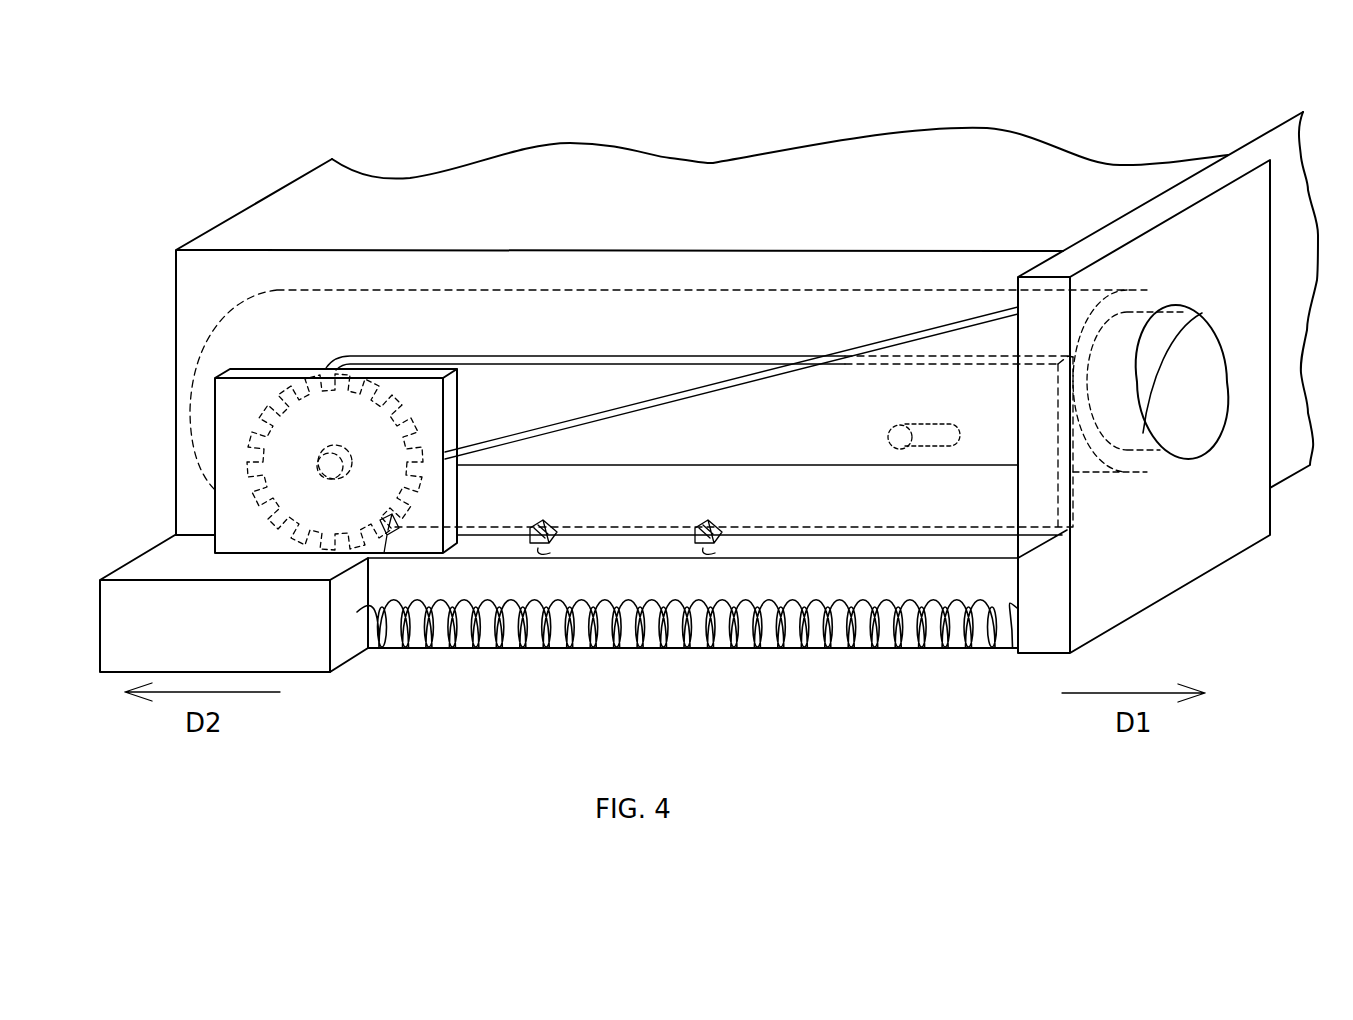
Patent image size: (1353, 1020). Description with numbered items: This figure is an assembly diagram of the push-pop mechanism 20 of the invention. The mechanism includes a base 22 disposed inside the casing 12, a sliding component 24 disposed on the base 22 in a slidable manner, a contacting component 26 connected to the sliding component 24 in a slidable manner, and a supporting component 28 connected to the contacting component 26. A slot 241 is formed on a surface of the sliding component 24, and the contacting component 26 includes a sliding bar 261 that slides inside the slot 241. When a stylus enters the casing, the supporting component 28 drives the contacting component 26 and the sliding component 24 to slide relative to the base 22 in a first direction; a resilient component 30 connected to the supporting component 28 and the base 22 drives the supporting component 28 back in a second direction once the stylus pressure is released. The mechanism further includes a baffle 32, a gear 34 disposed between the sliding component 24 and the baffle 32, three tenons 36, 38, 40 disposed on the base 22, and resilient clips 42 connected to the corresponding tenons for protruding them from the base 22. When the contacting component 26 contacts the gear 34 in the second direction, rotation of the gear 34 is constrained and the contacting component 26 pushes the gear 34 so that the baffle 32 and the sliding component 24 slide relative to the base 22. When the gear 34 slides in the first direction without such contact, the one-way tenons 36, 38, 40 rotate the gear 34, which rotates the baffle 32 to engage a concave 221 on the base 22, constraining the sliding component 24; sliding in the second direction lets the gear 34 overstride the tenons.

The casing 12 is at (200, 285).
The push-pop mechanism 20 is at (272, 169).
The base 22 is at (125, 626).
The concave 221 is at (362, 607).
The sliding component 24 is at (490, 395).
The slot 241 is at (944, 447).
The contacting component 26 is at (760, 400).
The sliding bar 261 is at (902, 425).
The supporting component 28 is at (1243, 518).
The resilient component 30 is at (966, 643).
The baffle 32 is at (257, 513).
The gear 34 is at (270, 418).
The tenon 36 is at (390, 537).
The tenon 38 is at (543, 522).
The tenon 40 is at (708, 522).
The resilient clip 42 is at (713, 553).